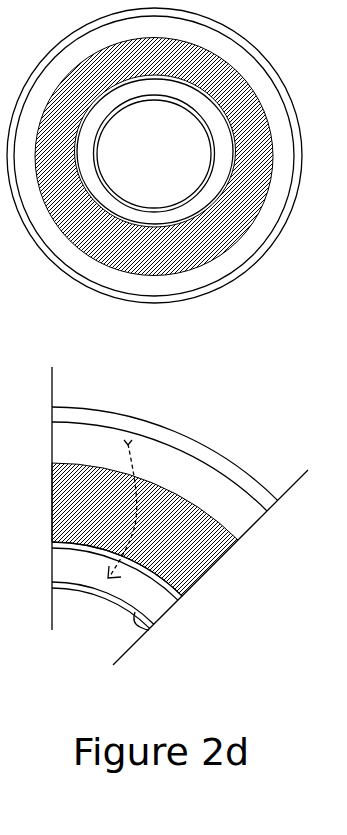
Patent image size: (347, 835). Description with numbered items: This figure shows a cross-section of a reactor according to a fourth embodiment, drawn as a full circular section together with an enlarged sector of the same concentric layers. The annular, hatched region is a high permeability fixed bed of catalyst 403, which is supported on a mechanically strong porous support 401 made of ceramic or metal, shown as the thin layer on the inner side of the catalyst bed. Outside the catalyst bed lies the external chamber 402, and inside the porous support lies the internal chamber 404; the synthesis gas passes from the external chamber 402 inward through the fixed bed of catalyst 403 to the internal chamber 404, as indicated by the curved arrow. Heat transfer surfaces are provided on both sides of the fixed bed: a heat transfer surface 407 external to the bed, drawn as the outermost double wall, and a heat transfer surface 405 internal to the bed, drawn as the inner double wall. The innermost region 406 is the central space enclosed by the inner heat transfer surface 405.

The porous support 401 is at (185, 598).
The external chamber 402 is at (233, 510).
The fixed bed of catalyst 403 is at (225, 565).
The internal chamber 404 is at (160, 607).
The heat transfer surface 405 is at (149, 630).
The central lumen 406 is at (115, 638).
The heat transfer surface 407 is at (183, 434).